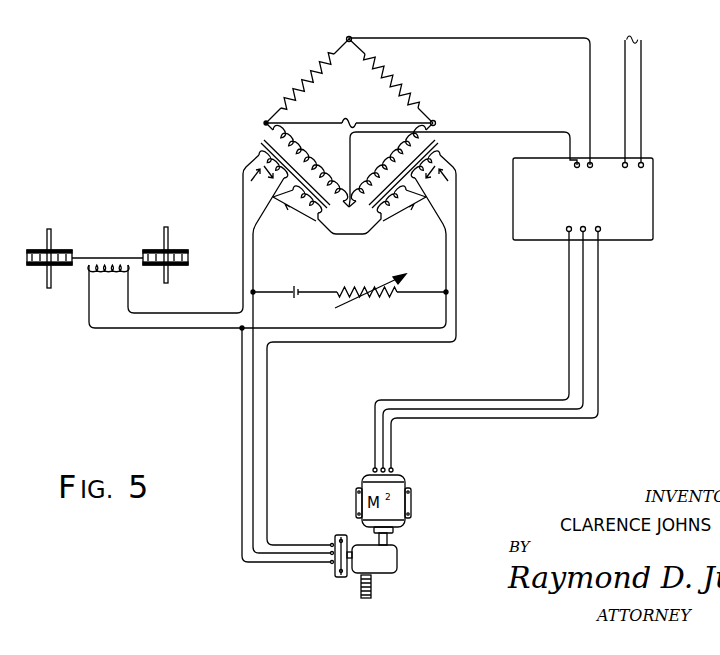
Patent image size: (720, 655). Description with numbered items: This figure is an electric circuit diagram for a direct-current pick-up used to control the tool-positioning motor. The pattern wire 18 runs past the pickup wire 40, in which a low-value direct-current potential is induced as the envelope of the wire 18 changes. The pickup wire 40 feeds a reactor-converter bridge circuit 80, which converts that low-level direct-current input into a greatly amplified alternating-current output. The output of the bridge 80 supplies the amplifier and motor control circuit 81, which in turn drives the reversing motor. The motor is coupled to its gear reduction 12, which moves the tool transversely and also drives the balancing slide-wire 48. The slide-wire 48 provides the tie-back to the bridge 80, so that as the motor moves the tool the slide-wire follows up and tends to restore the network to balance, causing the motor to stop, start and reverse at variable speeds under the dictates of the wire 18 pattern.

The reactor-converter circuit 80 is at (361, 100).
The amplifier and motor control circuit 81 is at (583, 138).
The wire 18 is at (89, 257).
The pickup wire 40 is at (108, 280).
The balancing slide-wire 48 is at (340, 535).
The gear reduction 12 is at (374, 571).